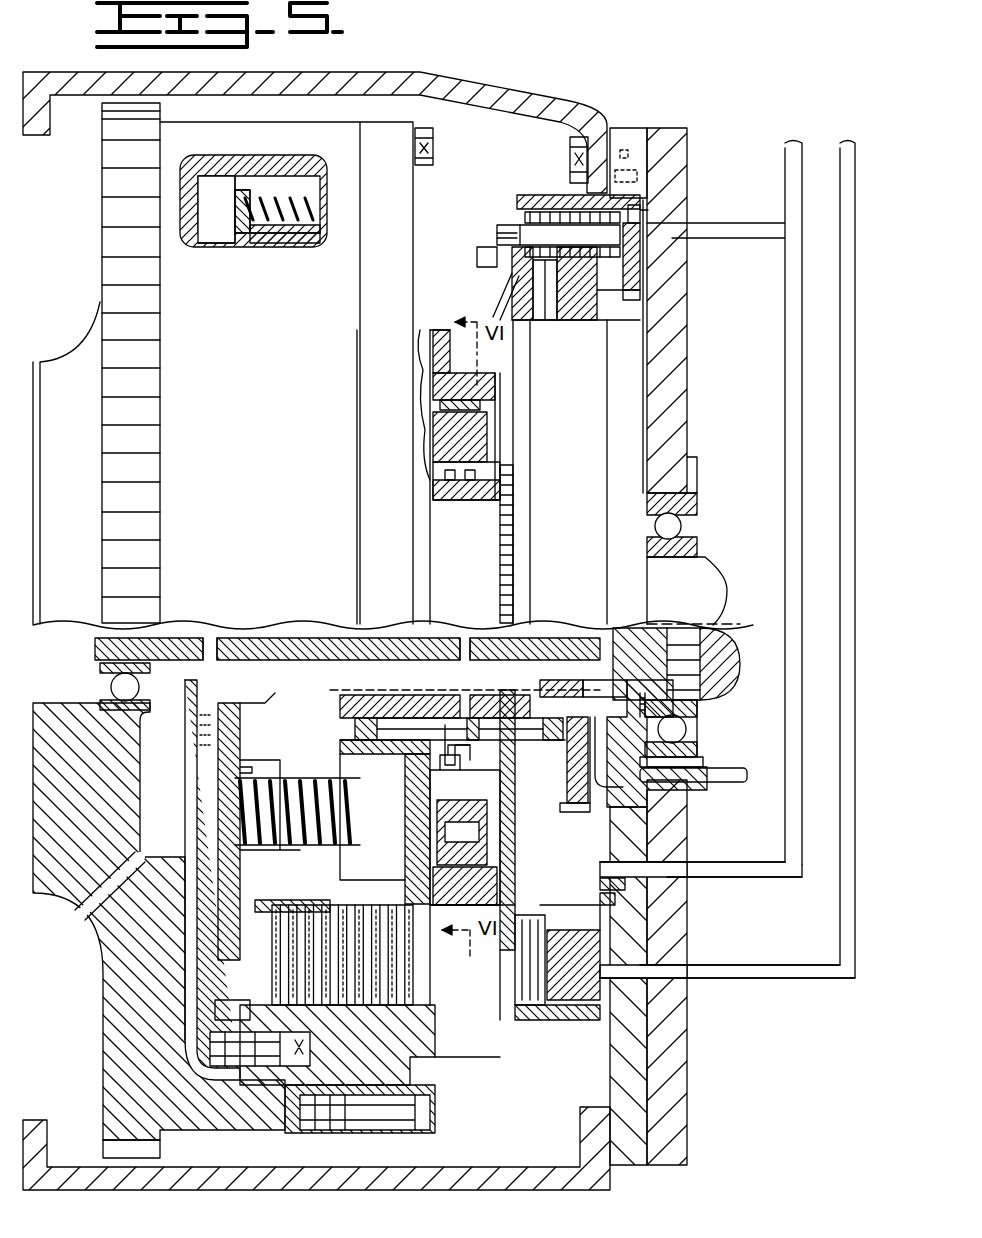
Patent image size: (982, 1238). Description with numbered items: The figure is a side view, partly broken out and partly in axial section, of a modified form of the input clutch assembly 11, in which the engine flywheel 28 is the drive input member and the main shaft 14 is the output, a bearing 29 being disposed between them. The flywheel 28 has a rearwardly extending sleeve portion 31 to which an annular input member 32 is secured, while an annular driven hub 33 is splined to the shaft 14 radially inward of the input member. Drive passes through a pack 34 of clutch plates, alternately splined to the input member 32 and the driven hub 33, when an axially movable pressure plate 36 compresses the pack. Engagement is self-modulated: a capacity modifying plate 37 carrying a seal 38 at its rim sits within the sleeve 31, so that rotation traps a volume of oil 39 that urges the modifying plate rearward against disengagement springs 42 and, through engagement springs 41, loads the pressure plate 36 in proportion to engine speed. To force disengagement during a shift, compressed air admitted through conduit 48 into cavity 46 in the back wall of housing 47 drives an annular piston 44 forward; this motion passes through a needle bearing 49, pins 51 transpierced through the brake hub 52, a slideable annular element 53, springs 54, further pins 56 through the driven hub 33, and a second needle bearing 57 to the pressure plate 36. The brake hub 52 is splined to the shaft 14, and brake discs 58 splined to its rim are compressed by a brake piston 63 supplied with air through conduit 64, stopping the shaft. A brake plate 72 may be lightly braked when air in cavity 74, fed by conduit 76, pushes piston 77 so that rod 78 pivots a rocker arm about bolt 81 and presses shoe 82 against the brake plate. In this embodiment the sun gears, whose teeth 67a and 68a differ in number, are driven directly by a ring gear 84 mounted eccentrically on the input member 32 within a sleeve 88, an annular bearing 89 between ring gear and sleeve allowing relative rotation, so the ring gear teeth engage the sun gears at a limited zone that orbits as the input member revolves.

The input clutch assembly 11 is at (630, 80).
The main shaft 14 is at (705, 560).
The engine flywheel 28 is at (159, 930).
The bearing 29 is at (98, 692).
The annular sleeve portion 31 is at (240, 1122).
The annular input member 32 is at (435, 1030).
The annular driven hub 33 is at (408, 835).
The clutch pack 34 is at (440, 990).
The annular pressure plate 36 is at (250, 968).
The capacity modifying plate 37 is at (215, 905).
The annular seal 38 is at (230, 1070).
The oil 39 is at (200, 736).
The engagement springs 41 is at (280, 785).
The disengagement springs 42 is at (275, 180).
The annular piston 44 is at (598, 884).
The cavity 46 is at (605, 904).
The housing 47 is at (680, 1080).
The conduit 48 is at (740, 878).
The needle bearing 49 is at (570, 712).
The axially slideable pins 51 is at (520, 735).
The annular brake hub 52 is at (540, 810).
The axially slideable annular element 53 is at (478, 705).
The springs 54 is at (455, 712).
The axially slideable pins 56 is at (365, 742).
The needle bearing 57 is at (355, 732).
The brake discs 58 is at (540, 960).
The brake piston 63 is at (575, 1008).
The conduit 64 is at (758, 978).
The teeth of first sun gear 67a is at (452, 740).
The teeth of second sun gear 68a is at (475, 782).
The brake plate 72 is at (500, 873).
The cavity 74 is at (642, 278).
The conduit 76 is at (722, 230).
The piston 77 is at (640, 212).
The rod 78 is at (525, 215).
The bolt 81 is at (480, 255).
The shoe 82 is at (495, 305).
The ring gear 84 is at (465, 837).
The sleeve 88 is at (490, 378).
The annular bearing 89 is at (482, 405).